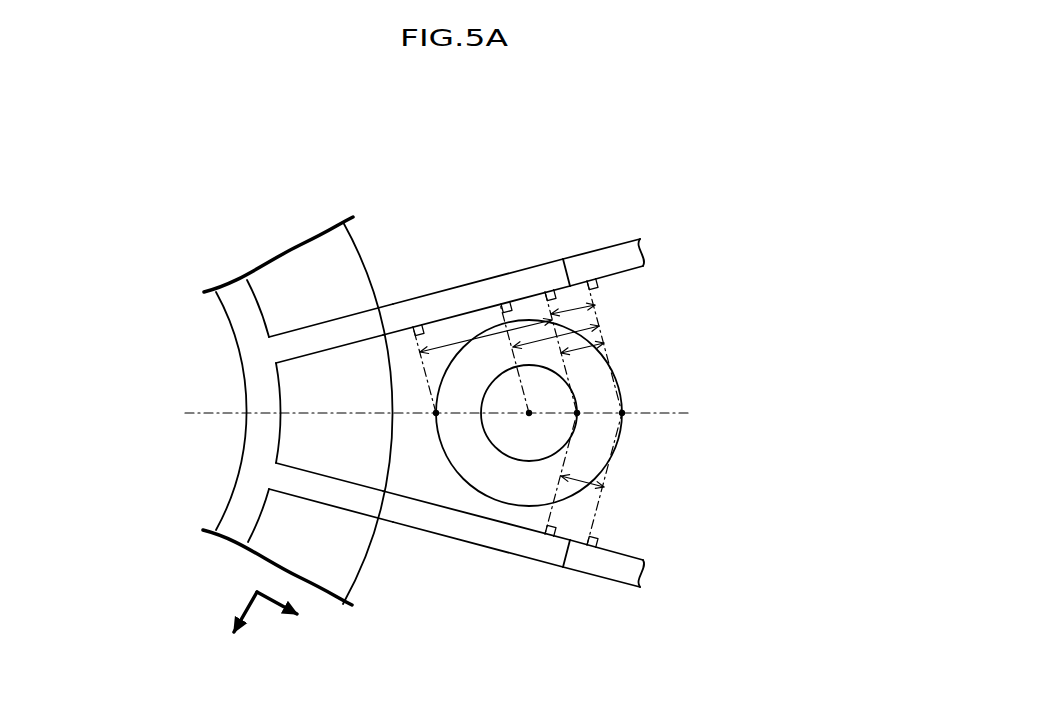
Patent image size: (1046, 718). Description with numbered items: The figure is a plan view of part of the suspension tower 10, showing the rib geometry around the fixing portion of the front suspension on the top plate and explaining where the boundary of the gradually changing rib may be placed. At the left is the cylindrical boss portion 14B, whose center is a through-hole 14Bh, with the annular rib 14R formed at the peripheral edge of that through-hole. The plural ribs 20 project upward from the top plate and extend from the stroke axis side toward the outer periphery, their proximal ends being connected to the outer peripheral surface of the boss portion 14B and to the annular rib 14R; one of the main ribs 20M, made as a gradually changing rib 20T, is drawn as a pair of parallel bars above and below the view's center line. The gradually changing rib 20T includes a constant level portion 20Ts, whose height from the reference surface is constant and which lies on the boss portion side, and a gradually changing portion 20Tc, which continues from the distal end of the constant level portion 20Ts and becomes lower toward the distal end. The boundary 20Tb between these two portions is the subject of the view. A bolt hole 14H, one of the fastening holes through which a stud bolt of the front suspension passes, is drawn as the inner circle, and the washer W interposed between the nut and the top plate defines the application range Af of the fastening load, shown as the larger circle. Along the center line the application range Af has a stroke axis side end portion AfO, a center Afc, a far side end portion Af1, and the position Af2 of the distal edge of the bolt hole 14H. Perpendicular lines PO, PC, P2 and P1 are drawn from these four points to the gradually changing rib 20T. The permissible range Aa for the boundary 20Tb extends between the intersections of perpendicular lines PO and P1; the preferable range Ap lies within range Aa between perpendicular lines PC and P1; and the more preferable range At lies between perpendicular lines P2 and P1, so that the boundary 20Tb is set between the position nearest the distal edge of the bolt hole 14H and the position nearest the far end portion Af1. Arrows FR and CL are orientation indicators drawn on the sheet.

The suspension tower 10 is at (498, 180).
The annular rib 14R is at (237, 310).
The boss portion 14B is at (340, 270).
The through-hole 14Bh is at (228, 386).
The bolt hole 14H is at (507, 447).
The rib 20 is at (502, 417).
The main rib 20M is at (502, 417).
The gradually changing rib 20T is at (502, 417).
The constant level portion 20Ts is at (477, 285).
The boundary 20Tb is at (563, 259).
The gradually changing portion 20Tc is at (617, 255).
The application range of the fastening load Af is at (504, 446).
The washer W is at (473, 482).
The center of the application range Afc is at (526, 374).
The stroke axis side end portion of the application range AfO is at (436, 417).
The far side end portion of the application range Af1 is at (625, 405).
The distal edge position of the bolt hole Af2 is at (590, 402).
The perpendicular line Pc PC is at (509, 369).
The perpendicular line P0 PO is at (429, 385).
The perpendicular line P1 is at (610, 367).
The perpendicular line P2 is at (597, 297).
The permissible setting range Aa is at (453, 345).
The preferable setting range Ap is at (551, 314).
The more preferable setting range At is at (582, 415).
The front direction FR is at (248, 629).
The center line direction CL is at (298, 618).